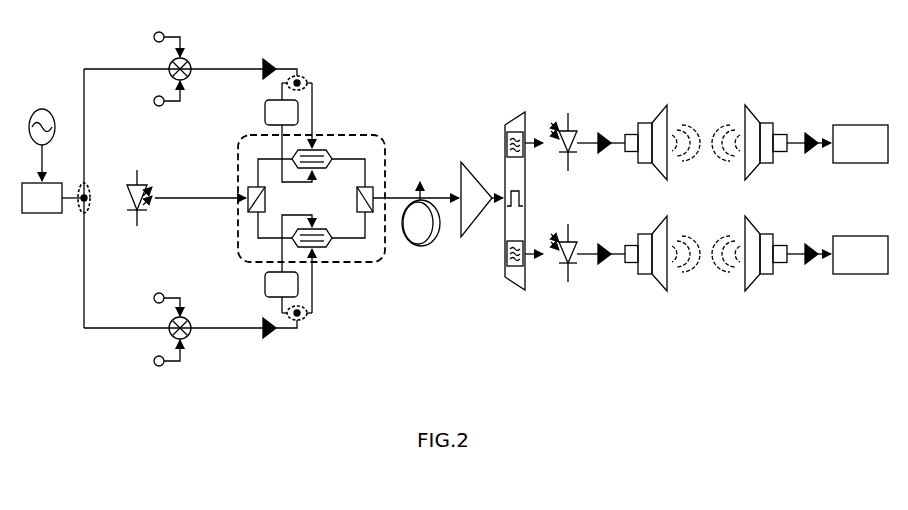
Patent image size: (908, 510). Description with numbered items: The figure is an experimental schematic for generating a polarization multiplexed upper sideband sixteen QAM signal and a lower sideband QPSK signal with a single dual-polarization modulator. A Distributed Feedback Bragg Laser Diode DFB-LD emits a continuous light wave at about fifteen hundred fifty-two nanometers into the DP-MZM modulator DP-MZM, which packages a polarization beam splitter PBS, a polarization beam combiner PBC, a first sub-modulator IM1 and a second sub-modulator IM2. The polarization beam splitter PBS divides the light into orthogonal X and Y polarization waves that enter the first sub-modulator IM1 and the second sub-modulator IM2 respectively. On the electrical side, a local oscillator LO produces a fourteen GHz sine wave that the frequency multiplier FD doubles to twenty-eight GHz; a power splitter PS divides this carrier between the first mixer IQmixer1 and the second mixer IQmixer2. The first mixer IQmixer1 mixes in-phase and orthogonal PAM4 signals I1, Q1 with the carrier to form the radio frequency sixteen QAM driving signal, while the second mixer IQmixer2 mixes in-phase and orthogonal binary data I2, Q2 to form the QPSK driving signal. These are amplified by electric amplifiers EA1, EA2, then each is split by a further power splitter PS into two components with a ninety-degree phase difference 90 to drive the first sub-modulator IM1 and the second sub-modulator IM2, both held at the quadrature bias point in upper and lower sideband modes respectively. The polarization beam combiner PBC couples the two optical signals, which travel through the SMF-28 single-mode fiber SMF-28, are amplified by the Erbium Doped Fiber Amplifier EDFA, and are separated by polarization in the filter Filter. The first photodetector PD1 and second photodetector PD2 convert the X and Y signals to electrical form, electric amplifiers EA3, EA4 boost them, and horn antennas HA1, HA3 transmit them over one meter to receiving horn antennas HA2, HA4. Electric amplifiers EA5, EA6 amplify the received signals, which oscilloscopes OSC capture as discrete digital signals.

The local oscillator LO is at (42, 131).
The frequency multiplier FD is at (53, 211).
The power splitter PS is at (210, 209).
The in-phase PAM4 signal I1 is at (160, 44).
The orthogonal PAM4 signal Q1 is at (157, 93).
The in-phase binary data I2 is at (160, 304).
The orthogonal binary data Q2 is at (157, 356).
The first mixer IQmixer1 is at (209, 76).
The second mixer IQmixer2 is at (209, 322).
The electric amplifier EA1 is at (280, 58).
The electric amplifier EA2 is at (280, 343).
The electric amplifier EA3 is at (610, 157).
The electric amplifier EA4 is at (610, 267).
The electric amplifier EA5 is at (815, 158).
The electric amplifier EA6 is at (815, 267).
The ninety-degree phase shift 90 is at (288, 198).
The Distributed Feedback Bragg Laser Diode DFB-LD is at (181, 214).
The DP-MZM modulator DP-MZM is at (282, 199).
The polarization beam splitter PBS is at (271, 199).
The polarization beam combiner PBC is at (350, 199).
The first sub-modulator IM1 is at (311, 164).
The second sub-modulator IM2 is at (311, 237).
The SMF-28 single-mode fiber SMF-28 is at (416, 228).
The Erbium Doped Fiber Amplifier EDFA is at (480, 211).
The filter Filter is at (502, 201).
The first photodetector PD1 is at (574, 155).
The second photodetector PD2 is at (574, 244).
The horn antenna HA1 is at (662, 156).
The horn antenna HA2 is at (758, 156).
The horn antenna HA3 is at (662, 267).
The horn antenna HA4 is at (758, 267).
The oscilloscope OSC is at (860, 199).